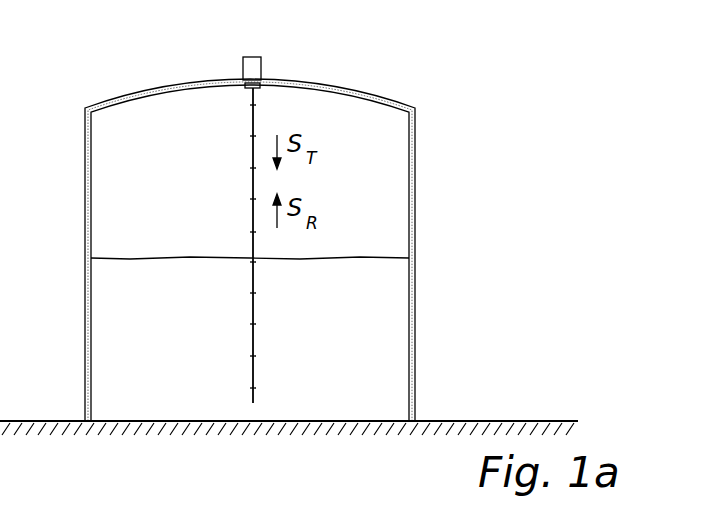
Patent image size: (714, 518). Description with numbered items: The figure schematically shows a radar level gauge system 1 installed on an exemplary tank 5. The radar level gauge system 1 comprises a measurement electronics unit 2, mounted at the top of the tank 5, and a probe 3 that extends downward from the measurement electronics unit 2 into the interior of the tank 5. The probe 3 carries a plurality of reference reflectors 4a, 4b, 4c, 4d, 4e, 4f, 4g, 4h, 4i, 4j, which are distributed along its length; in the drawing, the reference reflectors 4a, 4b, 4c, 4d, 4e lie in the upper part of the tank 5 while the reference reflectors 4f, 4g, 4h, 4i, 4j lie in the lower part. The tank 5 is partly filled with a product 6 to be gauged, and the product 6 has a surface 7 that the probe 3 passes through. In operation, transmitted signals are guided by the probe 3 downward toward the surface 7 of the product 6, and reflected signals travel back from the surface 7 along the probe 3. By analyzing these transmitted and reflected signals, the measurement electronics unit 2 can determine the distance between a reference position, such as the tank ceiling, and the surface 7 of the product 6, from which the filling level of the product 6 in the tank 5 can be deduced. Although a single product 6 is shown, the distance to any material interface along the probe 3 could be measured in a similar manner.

The radar level gauge system 1 is at (253, 206).
The measurement electronics unit 2 is at (243, 66).
The probe 3 is at (256, 124).
The reference reflector 4a is at (253, 105).
The reference reflector 4b is at (253, 136).
The reference reflector 4c is at (253, 168).
The reference reflector 4d is at (253, 199).
The reference reflector 4e is at (253, 232).
The reference reflector 4f is at (253, 262).
The reference reflector 4g is at (253, 293).
The reference reflector 4h is at (253, 324).
The reference reflector 4i is at (253, 356).
The reference reflector 4j is at (253, 388).
The tank 5 is at (417, 144).
The product 6 is at (393, 328).
The surface 7 is at (394, 258).